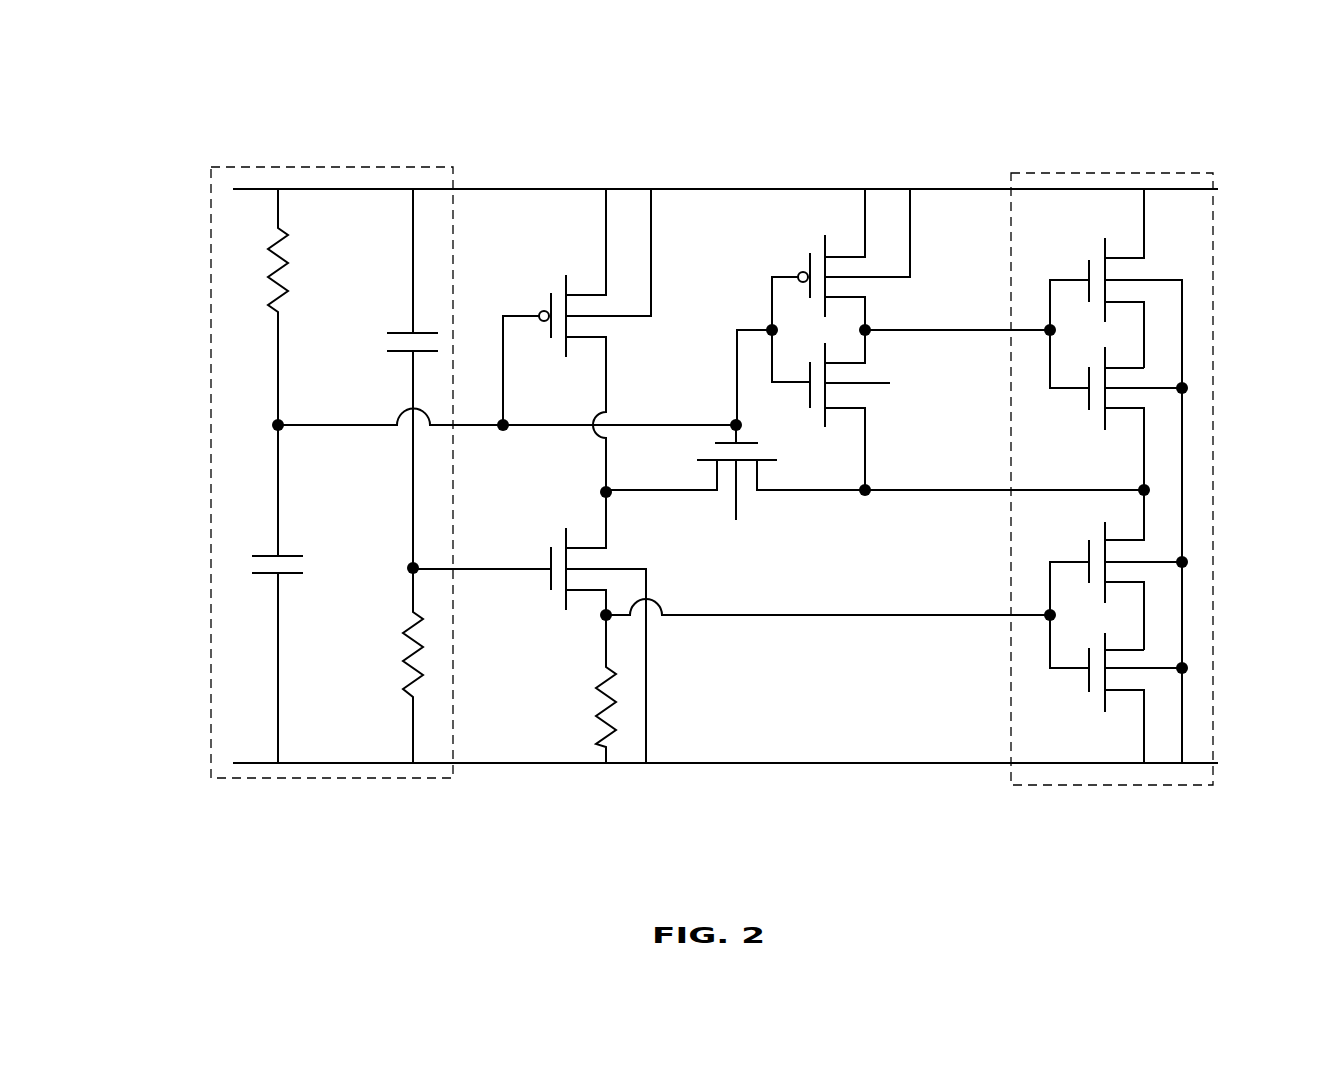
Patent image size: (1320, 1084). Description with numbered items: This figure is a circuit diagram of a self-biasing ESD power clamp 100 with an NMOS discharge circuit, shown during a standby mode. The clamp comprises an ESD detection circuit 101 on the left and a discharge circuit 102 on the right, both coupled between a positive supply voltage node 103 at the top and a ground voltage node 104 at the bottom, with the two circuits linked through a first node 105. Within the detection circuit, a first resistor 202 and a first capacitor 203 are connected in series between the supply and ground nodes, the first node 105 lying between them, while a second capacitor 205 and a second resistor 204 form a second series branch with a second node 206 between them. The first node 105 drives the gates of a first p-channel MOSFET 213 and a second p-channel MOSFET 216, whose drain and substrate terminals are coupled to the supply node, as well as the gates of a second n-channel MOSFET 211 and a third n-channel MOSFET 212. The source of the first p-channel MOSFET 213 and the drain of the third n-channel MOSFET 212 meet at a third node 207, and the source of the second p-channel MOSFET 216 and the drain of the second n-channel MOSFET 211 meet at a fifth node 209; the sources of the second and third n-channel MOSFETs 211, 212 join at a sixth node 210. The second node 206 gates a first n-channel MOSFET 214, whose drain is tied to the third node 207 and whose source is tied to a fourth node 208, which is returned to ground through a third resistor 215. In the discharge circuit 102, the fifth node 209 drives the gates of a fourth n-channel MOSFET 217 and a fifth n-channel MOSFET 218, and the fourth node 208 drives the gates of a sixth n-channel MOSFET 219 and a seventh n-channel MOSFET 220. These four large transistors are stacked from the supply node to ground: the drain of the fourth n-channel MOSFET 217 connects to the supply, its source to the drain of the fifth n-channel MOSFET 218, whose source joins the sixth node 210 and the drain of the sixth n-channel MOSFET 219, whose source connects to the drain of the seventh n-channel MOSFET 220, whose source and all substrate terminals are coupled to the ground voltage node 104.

The self-biasing ESD power clamp 100 is at (1131, 104).
The ESD detection circuit 101 is at (206, 327).
The discharge circuit 102 is at (1220, 404).
The positive supply voltage node 103 is at (640, 180).
The ground voltage node 104 is at (792, 770).
The first node 105 is at (268, 421).
The first resistor R1 202 is at (253, 250).
The first capacitor C1 203 is at (238, 546).
The second resistor R2 204 is at (387, 679).
The second capacitor C2 205 is at (370, 320).
The second node 206 is at (400, 560).
The third node 207 is at (614, 502).
The fourth node 208 is at (616, 624).
The fifth node 209 is at (874, 324).
The sixth node 210 is at (868, 502).
The second n-channel MOSFET 211 is at (800, 372).
The third n-channel MOSFET 212 is at (745, 472).
The first p-channel MOSFET 213 is at (540, 294).
The first n-channel MOSFET 214 is at (545, 556).
The third resistor 215 is at (622, 706).
The second p-channel MOSFET 216 is at (760, 268).
The fourth n-channel MOSFET 217 is at (1096, 262).
The fifth n-channel MOSFET 218 is at (1078, 377).
The sixth n-channel MOSFET 219 is at (1078, 556).
The seventh n-channel MOSFET 220 is at (1078, 661).